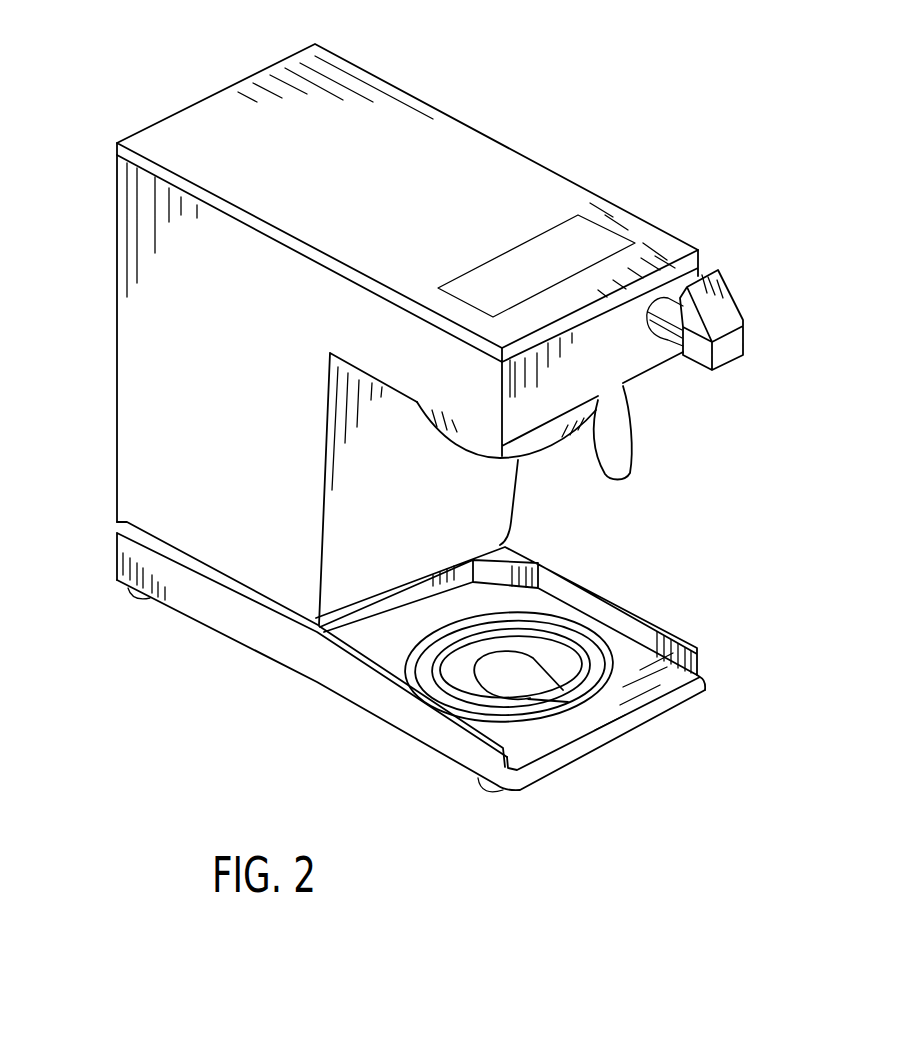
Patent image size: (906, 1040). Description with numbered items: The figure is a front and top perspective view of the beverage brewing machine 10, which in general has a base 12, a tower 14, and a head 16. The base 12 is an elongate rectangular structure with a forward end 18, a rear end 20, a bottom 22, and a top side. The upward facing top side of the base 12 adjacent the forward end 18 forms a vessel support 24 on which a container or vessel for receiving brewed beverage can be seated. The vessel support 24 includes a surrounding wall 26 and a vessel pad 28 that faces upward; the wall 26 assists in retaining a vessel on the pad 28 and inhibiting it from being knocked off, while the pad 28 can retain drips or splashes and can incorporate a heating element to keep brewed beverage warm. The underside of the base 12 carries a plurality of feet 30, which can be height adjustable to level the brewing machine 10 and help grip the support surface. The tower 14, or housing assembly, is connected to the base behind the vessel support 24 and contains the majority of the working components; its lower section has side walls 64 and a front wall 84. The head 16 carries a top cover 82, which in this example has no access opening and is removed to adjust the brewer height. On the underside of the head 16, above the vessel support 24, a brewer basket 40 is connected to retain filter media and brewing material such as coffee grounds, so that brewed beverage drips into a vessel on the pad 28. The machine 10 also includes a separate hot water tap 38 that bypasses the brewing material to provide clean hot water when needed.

The brewing machine 10 is at (207, 55).
The base 12 is at (282, 649).
The tower 14 is at (113, 262).
The head 16 is at (658, 256).
The forward end 18 is at (668, 710).
The rear end 20 is at (110, 553).
The bottom 22 is at (417, 750).
The vessel support 24 is at (622, 655).
The surrounding wall 26 is at (572, 593).
The vessel pad 28 is at (522, 678).
The feet 30 is at (137, 594).
The hot water tap 38 is at (736, 348).
The brewer basket 40 is at (540, 462).
The side walls 64 is at (233, 585).
The top cover 82 is at (518, 178).
The front wall 84 is at (498, 550).